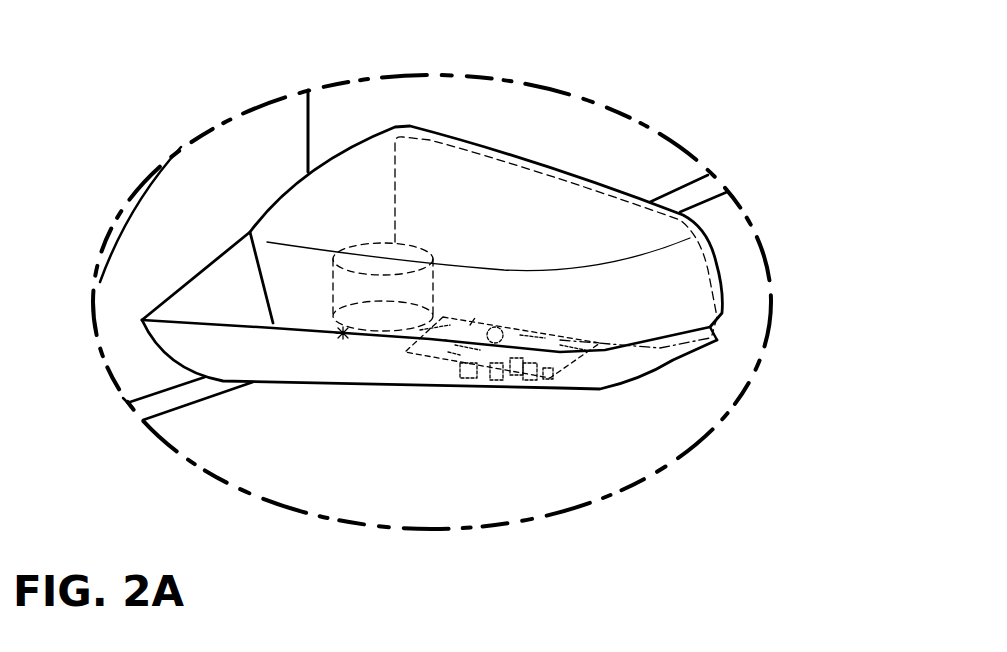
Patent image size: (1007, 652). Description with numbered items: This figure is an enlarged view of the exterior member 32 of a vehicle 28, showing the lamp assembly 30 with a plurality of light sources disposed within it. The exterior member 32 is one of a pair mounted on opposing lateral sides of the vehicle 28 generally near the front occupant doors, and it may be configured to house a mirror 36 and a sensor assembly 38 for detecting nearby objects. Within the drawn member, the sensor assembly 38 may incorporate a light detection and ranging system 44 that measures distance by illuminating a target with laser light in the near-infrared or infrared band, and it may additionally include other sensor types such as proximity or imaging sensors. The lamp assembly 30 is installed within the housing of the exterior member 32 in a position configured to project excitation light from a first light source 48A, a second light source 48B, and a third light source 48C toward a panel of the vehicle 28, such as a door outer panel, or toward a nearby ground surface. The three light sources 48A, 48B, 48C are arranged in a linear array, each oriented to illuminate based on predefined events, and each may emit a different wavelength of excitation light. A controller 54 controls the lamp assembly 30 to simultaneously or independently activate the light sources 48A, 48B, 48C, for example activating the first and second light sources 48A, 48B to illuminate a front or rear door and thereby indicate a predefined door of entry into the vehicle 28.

The vehicle 28 is at (185, 125).
The lamp assembly 30 is at (470, 384).
The exterior member 32 is at (515, 188).
The mirror 36 is at (607, 203).
The sensor assembly 38 is at (737, 277).
The light detection and ranging (LIDAR) system 44 is at (385, 332).
The first light source 48A is at (558, 367).
The second light source 48B is at (503, 386).
The third light source 48C is at (437, 366).
The controller 54 is at (593, 353).